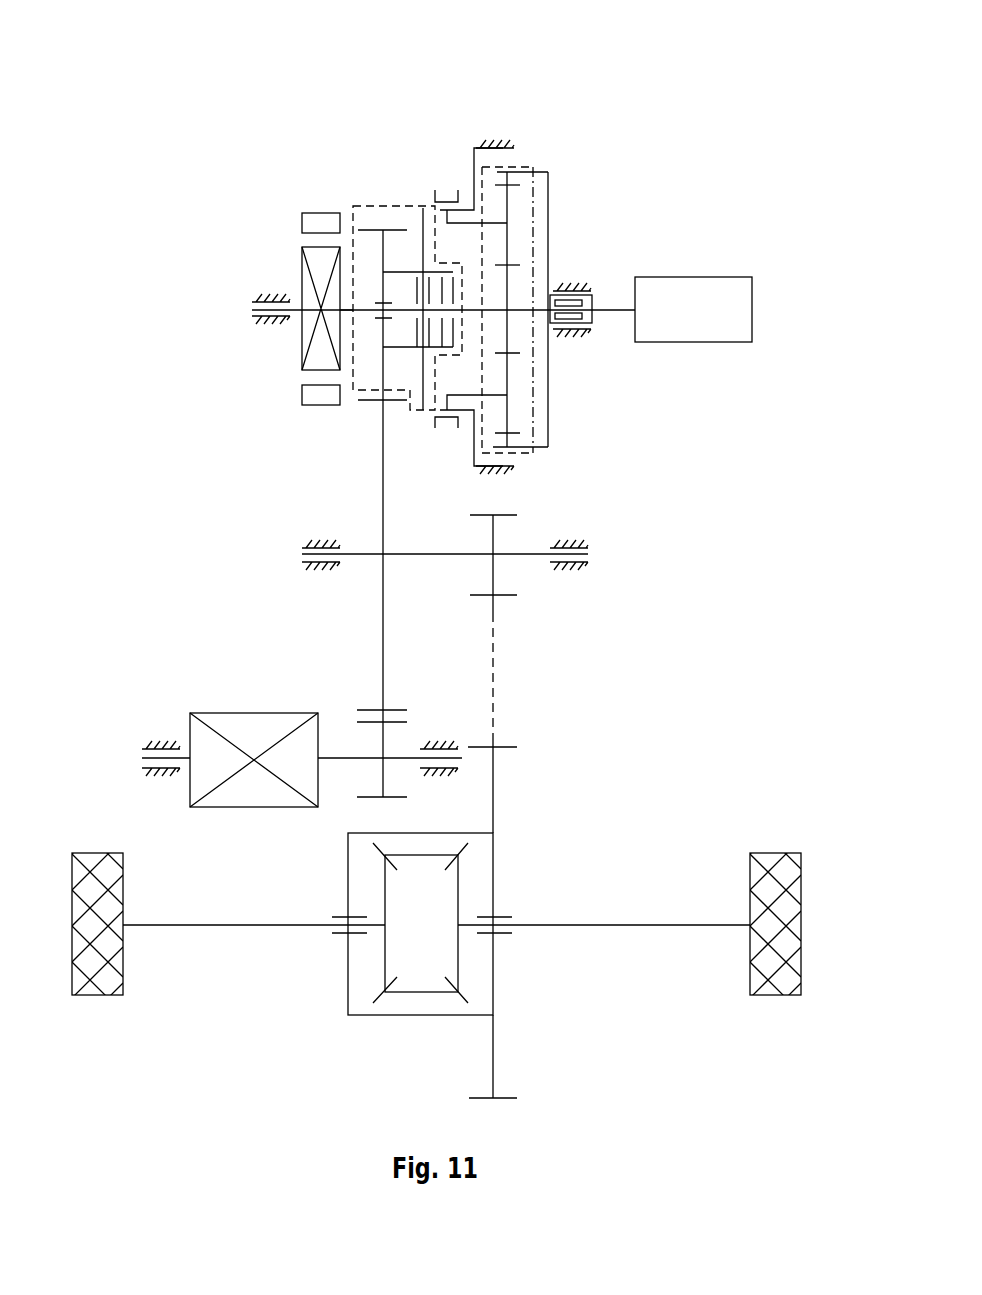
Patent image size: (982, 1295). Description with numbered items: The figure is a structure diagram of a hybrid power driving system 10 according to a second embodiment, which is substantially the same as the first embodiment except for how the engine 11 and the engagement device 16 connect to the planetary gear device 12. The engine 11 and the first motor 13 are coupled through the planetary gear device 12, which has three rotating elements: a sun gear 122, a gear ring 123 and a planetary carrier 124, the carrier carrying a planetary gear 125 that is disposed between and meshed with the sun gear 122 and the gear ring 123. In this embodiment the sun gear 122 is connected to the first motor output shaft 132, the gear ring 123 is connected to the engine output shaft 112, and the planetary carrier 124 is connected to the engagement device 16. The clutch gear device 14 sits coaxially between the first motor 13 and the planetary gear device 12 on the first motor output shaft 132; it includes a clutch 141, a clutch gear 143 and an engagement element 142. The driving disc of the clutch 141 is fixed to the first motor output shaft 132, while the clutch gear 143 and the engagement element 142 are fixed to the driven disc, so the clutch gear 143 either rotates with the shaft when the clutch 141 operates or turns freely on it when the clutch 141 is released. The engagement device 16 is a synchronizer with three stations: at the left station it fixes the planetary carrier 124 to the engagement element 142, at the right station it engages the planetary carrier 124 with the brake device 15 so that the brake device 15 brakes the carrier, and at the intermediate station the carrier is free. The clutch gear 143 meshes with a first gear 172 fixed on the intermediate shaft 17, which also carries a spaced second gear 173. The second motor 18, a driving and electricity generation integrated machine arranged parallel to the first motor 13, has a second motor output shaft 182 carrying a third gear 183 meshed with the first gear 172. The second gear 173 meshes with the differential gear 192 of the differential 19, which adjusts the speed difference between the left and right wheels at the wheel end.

The hybrid power driving system 10 is at (455, 37).
The engine 11 is at (728, 277).
The engine output shaft 112 is at (620, 312).
The planetary gear device 12 is at (520, 168).
The sun gear 122 is at (508, 328).
The gear ring 123 is at (512, 171).
The planetary carrier 124 is at (488, 397).
The planetary gear 125 is at (507, 202).
The first motor 13 is at (302, 251).
The first motor output shaft 132 is at (344, 312).
The clutch gear device 14 is at (377, 205).
The clutch 141 is at (426, 344).
The engagement element 142 is at (420, 210).
The clutch gear 143 is at (368, 222).
The brake device 15 is at (475, 178).
The engagement device 16 is at (446, 428).
The intermediate shaft 17 is at (370, 554).
The first gear 172 is at (385, 510).
The second gear 173 is at (497, 580).
The second motor 18 is at (205, 713).
The second motor output shaft 182 is at (335, 758).
The third gear 183 is at (385, 783).
The differential 19 is at (390, 1015).
The differential gear 192 is at (494, 1042).